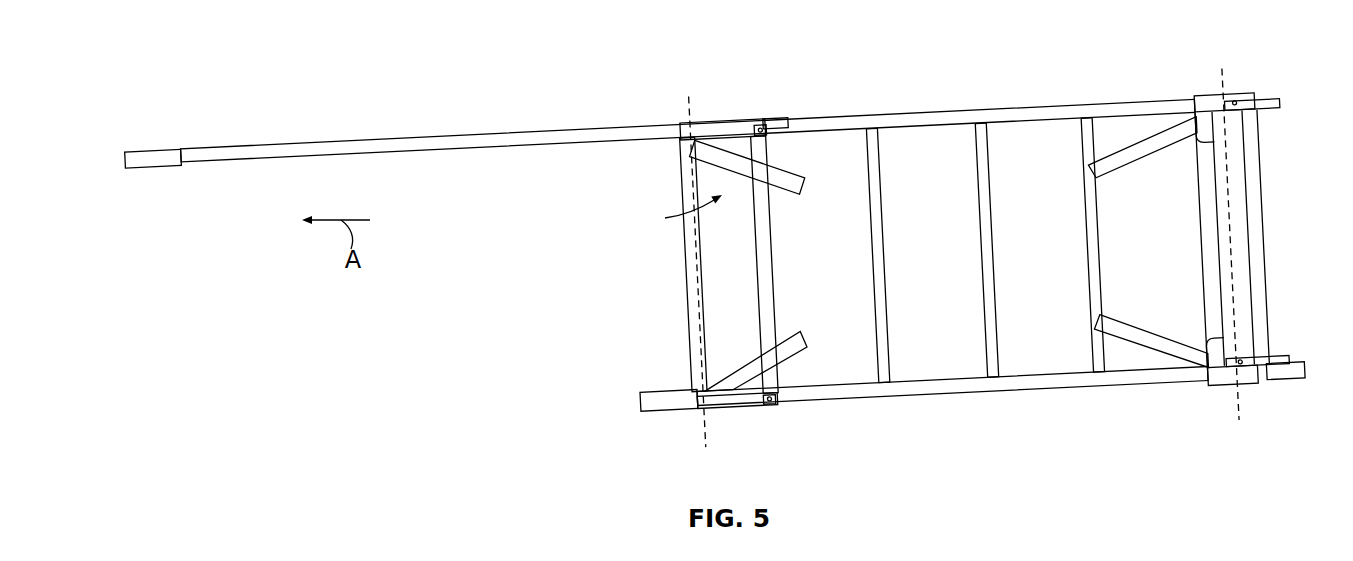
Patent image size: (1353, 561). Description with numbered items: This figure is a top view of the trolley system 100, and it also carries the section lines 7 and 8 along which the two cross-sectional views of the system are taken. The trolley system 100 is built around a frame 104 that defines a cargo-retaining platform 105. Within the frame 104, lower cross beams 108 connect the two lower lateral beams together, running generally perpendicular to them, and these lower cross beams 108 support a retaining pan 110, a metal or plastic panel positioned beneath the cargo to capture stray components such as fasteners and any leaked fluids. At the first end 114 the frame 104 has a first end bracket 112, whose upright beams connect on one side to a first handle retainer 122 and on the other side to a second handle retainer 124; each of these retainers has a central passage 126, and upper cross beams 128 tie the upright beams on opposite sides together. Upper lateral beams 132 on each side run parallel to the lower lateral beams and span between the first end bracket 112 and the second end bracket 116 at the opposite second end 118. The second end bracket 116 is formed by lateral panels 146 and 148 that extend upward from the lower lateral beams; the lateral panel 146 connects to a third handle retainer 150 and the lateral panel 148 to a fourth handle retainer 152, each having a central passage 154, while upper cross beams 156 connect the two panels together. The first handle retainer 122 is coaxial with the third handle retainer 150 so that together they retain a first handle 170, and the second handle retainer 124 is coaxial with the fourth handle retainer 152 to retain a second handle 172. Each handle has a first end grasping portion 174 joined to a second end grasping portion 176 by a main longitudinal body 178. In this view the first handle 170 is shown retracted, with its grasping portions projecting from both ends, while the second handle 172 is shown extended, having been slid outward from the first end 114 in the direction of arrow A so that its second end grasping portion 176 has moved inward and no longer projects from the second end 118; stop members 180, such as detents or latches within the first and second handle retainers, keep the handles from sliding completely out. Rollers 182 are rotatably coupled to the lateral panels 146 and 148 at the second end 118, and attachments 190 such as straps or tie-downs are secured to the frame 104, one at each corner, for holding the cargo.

The trolley system 100 is at (283, 52).
The frame 104 is at (672, 318).
The cargo-retaining platform 105 is at (670, 214).
The lower cross beams 108 is at (887, 229).
The retaining pan 110 is at (1030, 152).
The first end bracket 112 is at (736, 106).
The first end 114 is at (742, 428).
The second end bracket 116 is at (1240, 88).
The second end 118 is at (1252, 406).
The first handle retainer 122 is at (718, 406).
The second handle retainer 124 is at (712, 122).
The central passage 126 is at (745, 122).
The upper cross beams 128 is at (686, 292).
The upper lateral beams 132 is at (880, 112).
The lateral panel 146 is at (1235, 358).
The lateral panel 148 is at (1212, 140).
The third handle retainer 150 is at (1258, 386).
The fourth handle retainer 152 is at (1250, 100).
The central passage 154 is at (1230, 118).
The upper cross beams 156 is at (1260, 215).
The first handle 170 is at (1048, 390).
The second handle 172 is at (478, 132).
The first end grasping portion 174 is at (152, 168).
The second end grasping portion 176 is at (788, 124).
The main longitudinal body 178 is at (329, 137).
The stop members 180 is at (768, 136).
The rollers 182 is at (1280, 108).
The attachments 190 is at (799, 190).
The line 7- 7 is at (689, 97).
The line 8- 8 is at (1222, 68).